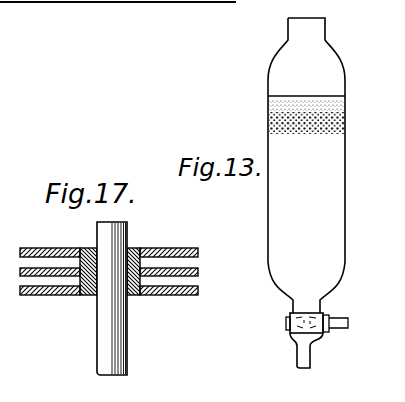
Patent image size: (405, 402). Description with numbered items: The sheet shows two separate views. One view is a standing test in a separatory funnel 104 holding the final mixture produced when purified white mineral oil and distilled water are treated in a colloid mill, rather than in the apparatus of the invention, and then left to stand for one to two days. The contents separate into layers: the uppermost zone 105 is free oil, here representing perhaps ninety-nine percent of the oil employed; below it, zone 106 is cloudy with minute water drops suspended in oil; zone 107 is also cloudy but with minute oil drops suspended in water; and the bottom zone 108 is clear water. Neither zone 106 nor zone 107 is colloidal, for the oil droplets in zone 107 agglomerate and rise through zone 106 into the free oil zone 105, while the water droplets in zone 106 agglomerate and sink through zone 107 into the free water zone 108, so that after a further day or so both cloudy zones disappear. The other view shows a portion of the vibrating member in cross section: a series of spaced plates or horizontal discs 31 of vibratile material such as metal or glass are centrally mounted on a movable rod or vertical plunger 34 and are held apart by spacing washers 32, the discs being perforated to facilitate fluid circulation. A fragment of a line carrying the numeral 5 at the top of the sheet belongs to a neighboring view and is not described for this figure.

In FIG. 17, the fragment line 5 is at (121, 0).
In FIG. 17, the plates 31 is at (191, 247).
In FIG. 17, the collar 32 is at (85, 297).
In FIG. 17, the tube 34 is at (113, 237).
In FIG. 13, the vessel 104 is at (338, 58).
In FIG. 13, the liquid level line 105 is at (269, 97).
In FIG. 13, the fine granular layer 106 is at (345, 108).
In FIG. 13, the coarse granular layer 107 is at (268, 123).
In FIG. 13, the stopcock outlet 108 is at (345, 197).